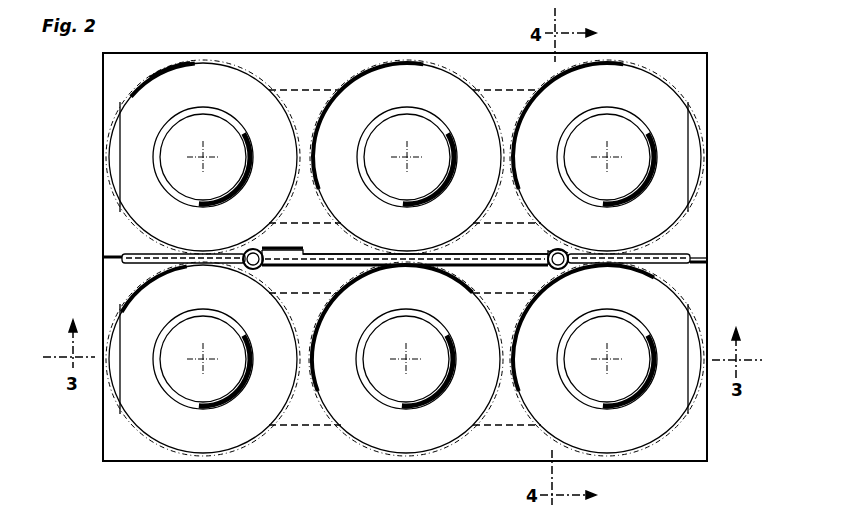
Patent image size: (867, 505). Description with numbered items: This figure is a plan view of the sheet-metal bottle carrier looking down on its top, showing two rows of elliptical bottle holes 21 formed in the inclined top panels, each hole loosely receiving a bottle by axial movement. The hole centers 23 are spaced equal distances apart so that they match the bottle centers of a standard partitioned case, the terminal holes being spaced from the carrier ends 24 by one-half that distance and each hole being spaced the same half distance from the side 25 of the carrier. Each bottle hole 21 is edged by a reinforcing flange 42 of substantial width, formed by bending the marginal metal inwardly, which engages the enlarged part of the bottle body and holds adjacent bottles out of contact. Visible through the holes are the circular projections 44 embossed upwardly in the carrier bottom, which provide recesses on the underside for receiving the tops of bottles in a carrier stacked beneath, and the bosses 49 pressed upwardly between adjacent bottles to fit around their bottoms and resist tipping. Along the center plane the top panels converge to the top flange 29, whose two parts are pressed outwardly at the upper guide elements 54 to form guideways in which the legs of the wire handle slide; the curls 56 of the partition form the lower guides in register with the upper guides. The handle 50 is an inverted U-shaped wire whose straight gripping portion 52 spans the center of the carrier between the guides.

The bottle holes 21 is at (262, 92).
The hole centers 23 is at (203, 158).
The carrier ends 24 is at (96, 219).
The side of the carrier 25 is at (452, 53).
The top flange 29 is at (678, 248).
The hole flanges 42 is at (150, 78).
The circular projections 44 is at (220, 120).
The bosses 49 is at (296, 176).
The axle housing strip 50 is at (466, 252).
The handle portion 52 is at (367, 258).
The upper guide elements 54 is at (262, 266).
The curls 56 is at (563, 269).